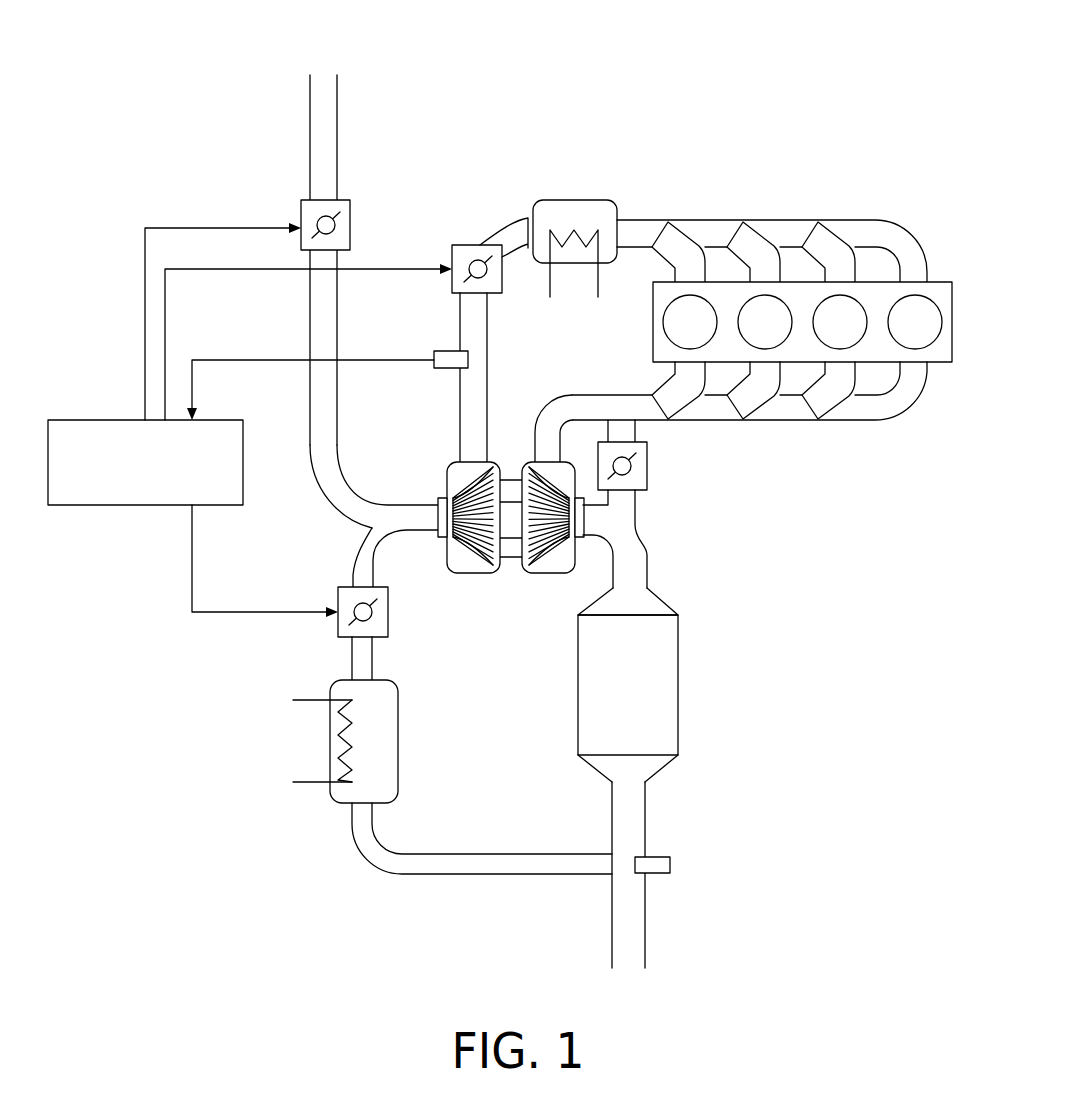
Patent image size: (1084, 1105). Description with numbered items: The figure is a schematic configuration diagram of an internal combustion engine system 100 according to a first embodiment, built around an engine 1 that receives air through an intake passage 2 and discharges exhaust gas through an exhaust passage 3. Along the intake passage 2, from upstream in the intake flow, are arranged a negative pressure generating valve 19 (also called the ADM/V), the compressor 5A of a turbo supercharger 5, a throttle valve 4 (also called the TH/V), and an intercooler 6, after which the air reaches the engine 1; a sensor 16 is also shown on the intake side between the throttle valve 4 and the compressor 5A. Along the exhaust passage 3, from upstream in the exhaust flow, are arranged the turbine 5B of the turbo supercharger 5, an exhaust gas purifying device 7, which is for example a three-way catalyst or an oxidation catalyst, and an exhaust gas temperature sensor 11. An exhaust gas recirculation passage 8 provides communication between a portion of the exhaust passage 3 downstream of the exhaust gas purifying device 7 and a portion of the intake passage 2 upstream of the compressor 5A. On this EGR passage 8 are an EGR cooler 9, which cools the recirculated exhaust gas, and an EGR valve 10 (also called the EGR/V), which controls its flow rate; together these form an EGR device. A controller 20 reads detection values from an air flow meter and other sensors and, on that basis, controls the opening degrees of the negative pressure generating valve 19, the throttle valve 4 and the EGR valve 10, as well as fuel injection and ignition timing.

The internal combustion engine system 100 is at (744, 78).
The engine 1 is at (940, 284).
The intake passage 2 is at (335, 428).
The exhaust passage 3 is at (633, 827).
The throttle valve 4 is at (463, 245).
The turbo supercharger 5 is at (510, 615).
The compressor 5A is at (462, 563).
The turbine 5B is at (545, 563).
The intercooler 6 is at (542, 193).
The exhaust gas purifying device 7 is at (668, 660).
The exhaust gas recirculation passage 8 is at (462, 863).
The EGR cooler 9 is at (388, 785).
The EGR valve 10 is at (336, 594).
The exhaust gas temperature sensor 11 is at (670, 871).
The intake pressure sensor 16 is at (433, 368).
The negative pressure generating valve 19 is at (300, 212).
The controller 20 is at (130, 508).